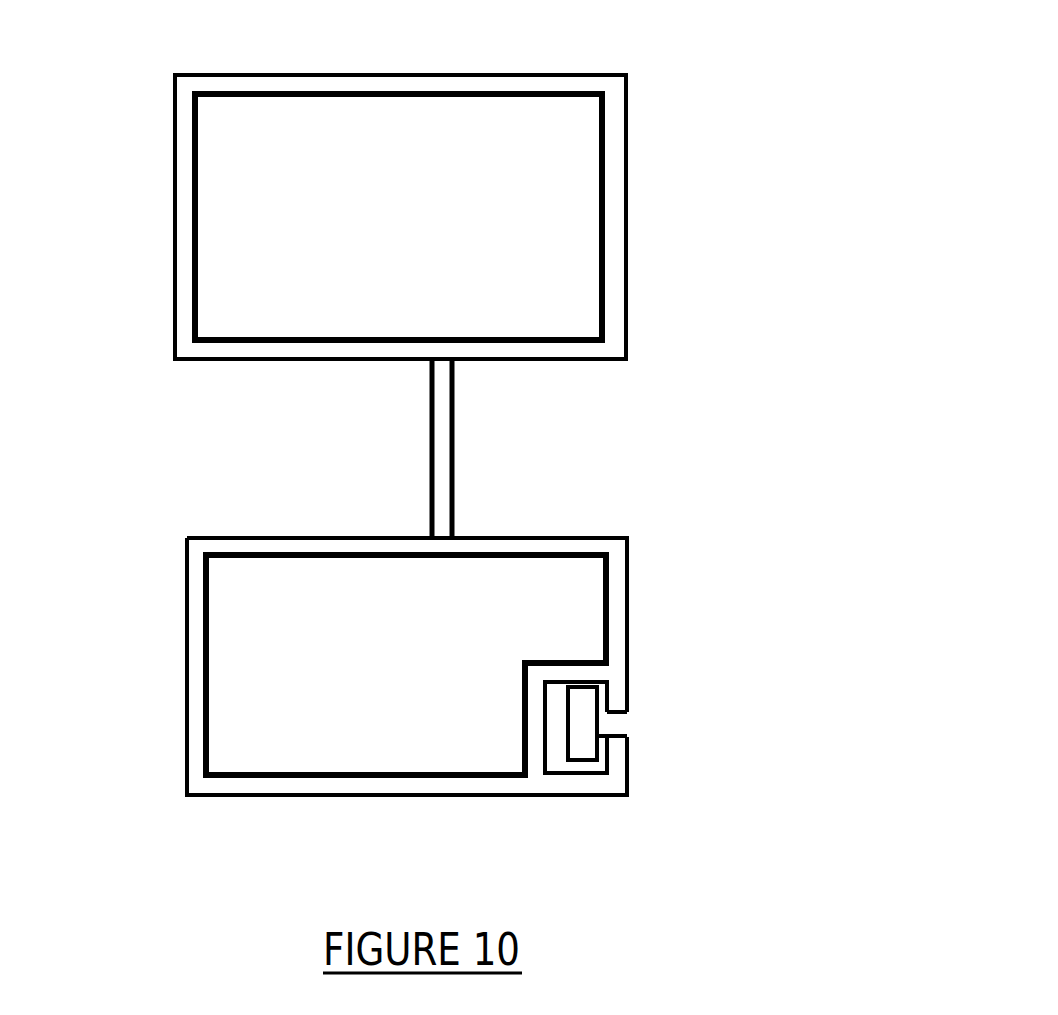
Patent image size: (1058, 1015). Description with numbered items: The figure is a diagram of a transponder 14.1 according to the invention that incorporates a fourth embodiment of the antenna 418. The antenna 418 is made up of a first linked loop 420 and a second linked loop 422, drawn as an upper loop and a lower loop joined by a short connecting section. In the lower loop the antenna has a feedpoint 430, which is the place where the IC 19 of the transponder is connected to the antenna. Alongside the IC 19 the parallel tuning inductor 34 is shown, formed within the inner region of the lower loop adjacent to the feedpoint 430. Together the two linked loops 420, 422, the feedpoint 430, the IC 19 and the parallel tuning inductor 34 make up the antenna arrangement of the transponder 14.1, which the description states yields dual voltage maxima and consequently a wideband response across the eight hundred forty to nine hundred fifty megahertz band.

The transponder 14.1 is at (780, 68).
The first linked loop 420 is at (175, 257).
The antenna 418 is at (558, 382).
The second linked loop 422 is at (187, 623).
The parallel tuning inductor 34 is at (525, 665).
The IC 19 is at (567, 729).
The feedpoint 430 is at (625, 727).